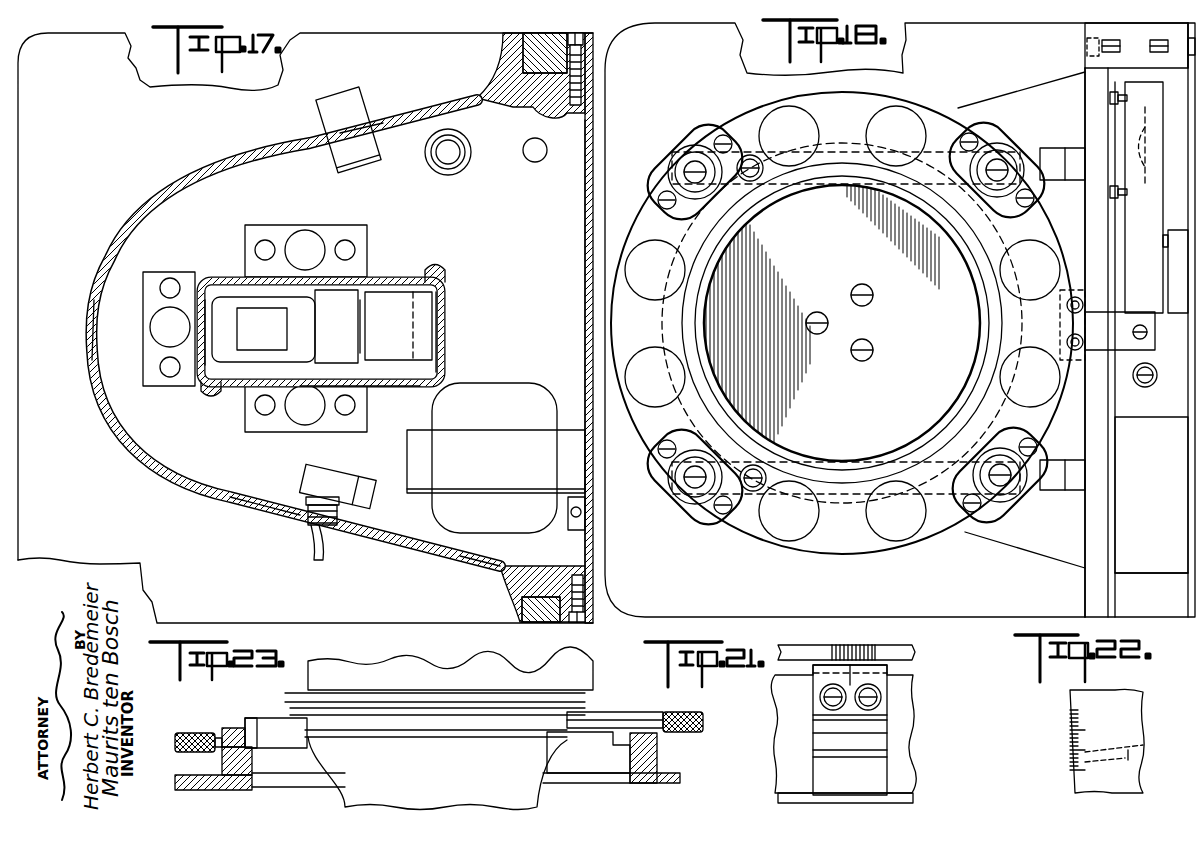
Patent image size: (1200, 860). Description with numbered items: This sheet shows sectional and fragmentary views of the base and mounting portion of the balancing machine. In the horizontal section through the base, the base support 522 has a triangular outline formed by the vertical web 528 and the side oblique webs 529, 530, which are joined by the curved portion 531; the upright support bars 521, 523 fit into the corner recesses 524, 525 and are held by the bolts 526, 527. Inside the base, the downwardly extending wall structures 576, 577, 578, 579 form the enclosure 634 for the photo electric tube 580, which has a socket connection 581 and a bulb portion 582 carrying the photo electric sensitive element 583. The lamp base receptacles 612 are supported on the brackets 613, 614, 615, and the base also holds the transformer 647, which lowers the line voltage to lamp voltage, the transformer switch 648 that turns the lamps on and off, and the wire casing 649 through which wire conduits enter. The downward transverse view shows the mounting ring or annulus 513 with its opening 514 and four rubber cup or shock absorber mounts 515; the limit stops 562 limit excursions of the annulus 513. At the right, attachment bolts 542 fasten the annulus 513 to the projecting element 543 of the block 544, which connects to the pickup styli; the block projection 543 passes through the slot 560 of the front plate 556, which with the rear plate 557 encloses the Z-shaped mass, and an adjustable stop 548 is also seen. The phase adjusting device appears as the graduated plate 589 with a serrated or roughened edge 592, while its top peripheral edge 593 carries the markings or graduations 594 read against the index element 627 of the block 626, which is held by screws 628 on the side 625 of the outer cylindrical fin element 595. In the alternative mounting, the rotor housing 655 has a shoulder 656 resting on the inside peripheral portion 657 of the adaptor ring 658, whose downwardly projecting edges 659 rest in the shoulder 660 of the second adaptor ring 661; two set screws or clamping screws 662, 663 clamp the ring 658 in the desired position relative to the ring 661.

In FIG. 18, the mounting ring or annulus 513 is at (848, 540).
In FIG. 18, the opening 514 is at (781, 537).
In FIG. 18, the rubber cup or shock absorber mounts 515 is at (683, 143).
In FIG. 17, the upright support bar 521 is at (523, 45).
In FIG. 18, the upright support bar 521 is at (1150, 32).
In FIG. 17, the base support 522 is at (118, 240).
In FIG. 17, the upright support bar 523 is at (522, 607).
In FIG. 18, the upright support bar 523 is at (1150, 590).
In FIG. 17, the corner recess 524 is at (530, 75).
In FIG. 17, the corner recess 525 is at (510, 573).
In FIG. 17, the bolt 526 is at (568, 50).
In FIG. 17, the bolt 527 is at (576, 622).
In FIG. 17, the vertical web 528 is at (585, 252).
In FIG. 17, the side oblique web 529 is at (269, 150).
In FIG. 17, the side oblique web 530 is at (263, 505).
In FIG. 17, the curved portion 531 is at (88, 342).
In FIG. 18, the attachment bolts 542 is at (1066, 305).
In FIG. 18, the projecting element 543 is at (1012, 255).
In FIG. 18, the block 544 is at (1066, 341).
In FIG. 18, the adjustable stop 548 is at (1153, 384).
In FIG. 18, the front plate 556 is at (1090, 70).
In FIG. 18, the rear plate 557 is at (1125, 110).
In FIG. 18, the slot 560 is at (1090, 360).
In FIG. 18, the limit stops 562 is at (755, 177).
In FIG. 17, the wall structure 576 is at (445, 306).
In FIG. 17, the wall structure 577 is at (202, 358).
In FIG. 17, the wall structure 578 is at (390, 279).
In FIG. 17, the wall structure 579 is at (393, 378).
In FIG. 17, the photo electric tube 580 is at (333, 363).
In FIG. 17, the socket connection 581 is at (396, 344).
In FIG. 17, the bulb portion 582 is at (232, 363).
In FIG. 17, the photo electric sensitive element 583 is at (287, 329).
In FIG. 22, the graduated plate 589 is at (1130, 753).
In FIG. 21, the serrated or roughened edge 592 is at (870, 642).
In FIG. 22, the top peripheral edge 593 is at (1115, 696).
In FIG. 22, the markings or graduations 594 is at (1069, 736).
In FIG. 21, the outer cylindrical fin element 595 is at (906, 773).
In FIG. 17, the base receptacles 612 is at (302, 227).
In FIG. 17, the bracket 613 is at (358, 226).
In FIG. 17, the bracket 614 is at (362, 432).
In FIG. 17, the bracket 615 is at (143, 385).
In FIG. 21, the side 625 is at (900, 735).
In FIG. 21, the block 626 is at (890, 706).
In FIG. 21, the index element 627 is at (900, 672).
In FIG. 22, the index element 627 is at (1140, 729).
In FIG. 21, the screws 628 is at (868, 700).
In FIG. 17, the enclosure 634 is at (212, 283).
In FIG. 17, the transformer 647 is at (508, 453).
In FIG. 17, the transformer switch 648 is at (312, 550).
In FIG. 17, the wire casing 649 is at (330, 114).
In FIG. 23, the rotor housing 655 is at (420, 668).
In FIG. 23, the shoulder 656 is at (491, 716).
In FIG. 23, the inside peripheral portion 657 is at (300, 736).
In FIG. 23, the adaptor ring 658 is at (276, 735).
In FIG. 23, the downwardly projecting edges 659 is at (250, 725).
In FIG. 23, the shoulder 660 is at (656, 783).
In FIG. 23, the second adaptor ring 661 is at (625, 758).
In FIG. 23, the set screw or clamping screw 662 is at (200, 730).
In FIG. 23, the set screw or clamping screw 663 is at (684, 733).